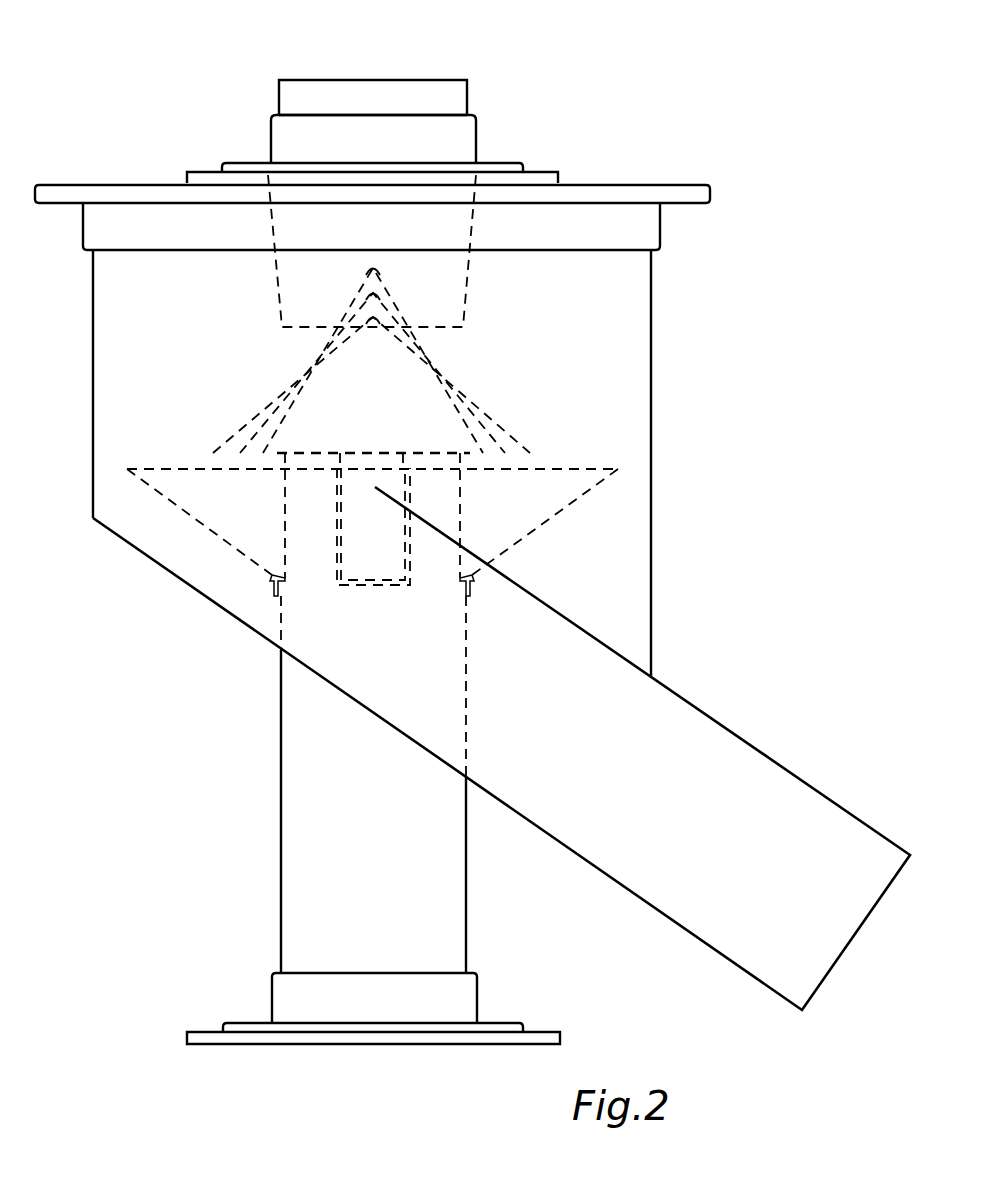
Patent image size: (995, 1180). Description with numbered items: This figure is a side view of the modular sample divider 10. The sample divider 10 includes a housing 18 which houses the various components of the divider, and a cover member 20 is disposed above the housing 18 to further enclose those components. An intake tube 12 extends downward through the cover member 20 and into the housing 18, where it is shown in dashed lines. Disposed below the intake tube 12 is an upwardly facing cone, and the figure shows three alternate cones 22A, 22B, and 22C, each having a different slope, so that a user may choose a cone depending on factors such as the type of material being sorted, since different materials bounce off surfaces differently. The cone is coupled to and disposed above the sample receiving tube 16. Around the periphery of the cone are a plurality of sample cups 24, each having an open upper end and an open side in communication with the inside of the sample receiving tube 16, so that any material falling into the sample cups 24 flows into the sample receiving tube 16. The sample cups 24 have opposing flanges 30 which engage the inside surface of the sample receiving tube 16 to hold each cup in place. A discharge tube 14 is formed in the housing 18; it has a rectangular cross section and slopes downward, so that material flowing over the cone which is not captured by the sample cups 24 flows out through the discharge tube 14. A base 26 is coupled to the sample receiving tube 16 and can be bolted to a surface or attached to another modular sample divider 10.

The modular sample divider 10 is at (750, 453).
The intake tube 12 is at (422, 80).
The discharge tube 14 is at (753, 748).
The sample receiving tube 16 is at (287, 943).
The housing 18 is at (93, 351).
The cover member 20 is at (82, 185).
The first alternate cone 22A is at (387, 286).
The second alternate cone 22B is at (388, 312).
The third alternate cone 22C is at (503, 428).
The sample cups 24 is at (177, 469).
The base 26 is at (250, 1027).
The opposing flanges 30 is at (408, 498).